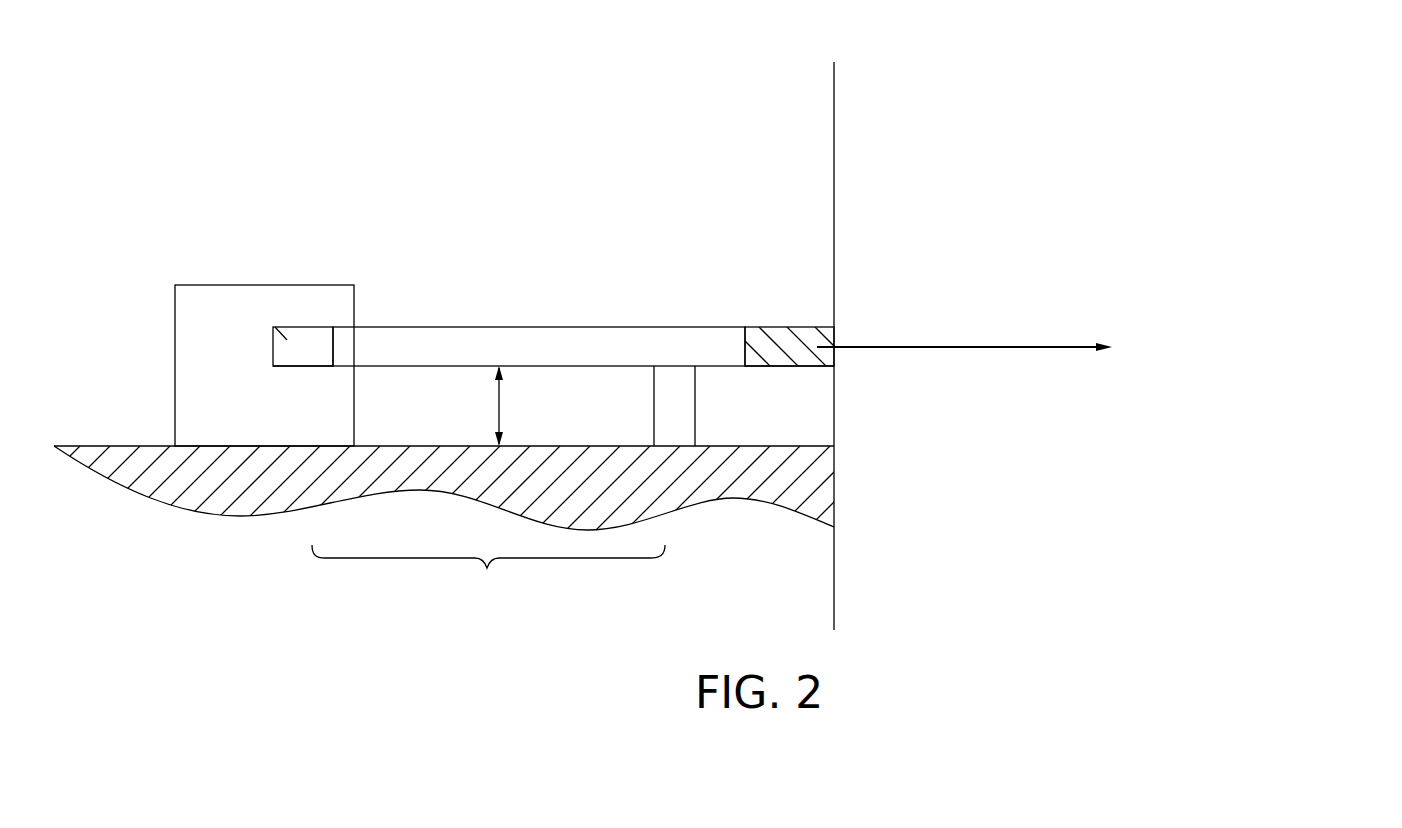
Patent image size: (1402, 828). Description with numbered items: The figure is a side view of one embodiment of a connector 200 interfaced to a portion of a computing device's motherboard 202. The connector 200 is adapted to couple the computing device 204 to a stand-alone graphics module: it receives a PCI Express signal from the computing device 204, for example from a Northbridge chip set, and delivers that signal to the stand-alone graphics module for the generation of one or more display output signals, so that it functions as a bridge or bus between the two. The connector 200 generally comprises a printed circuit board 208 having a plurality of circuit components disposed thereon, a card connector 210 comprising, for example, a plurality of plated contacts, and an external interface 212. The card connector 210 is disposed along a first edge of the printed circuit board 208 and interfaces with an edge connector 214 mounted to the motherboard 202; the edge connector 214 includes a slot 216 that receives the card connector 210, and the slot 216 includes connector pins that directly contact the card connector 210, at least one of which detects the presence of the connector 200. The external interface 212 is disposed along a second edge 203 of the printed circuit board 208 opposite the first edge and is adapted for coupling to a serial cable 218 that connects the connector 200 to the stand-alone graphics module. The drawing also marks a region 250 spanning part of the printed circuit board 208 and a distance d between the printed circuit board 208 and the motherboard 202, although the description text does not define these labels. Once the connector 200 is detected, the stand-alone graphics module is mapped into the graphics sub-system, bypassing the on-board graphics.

The connector 200 is at (487, 162).
The motherboard 202 is at (683, 487).
The second edge 203 is at (275, 365).
The computing device 204 is at (834, 103).
The printed circuit board 208 is at (528, 345).
The card connector 210 is at (275, 327).
The external interface 212 is at (786, 327).
The edge connector 214 is at (218, 402).
The slot 216 is at (273, 349).
The serial cable 218 is at (963, 350).
The span region 250 is at (488, 577).
The standoff distance d is at (502, 403).